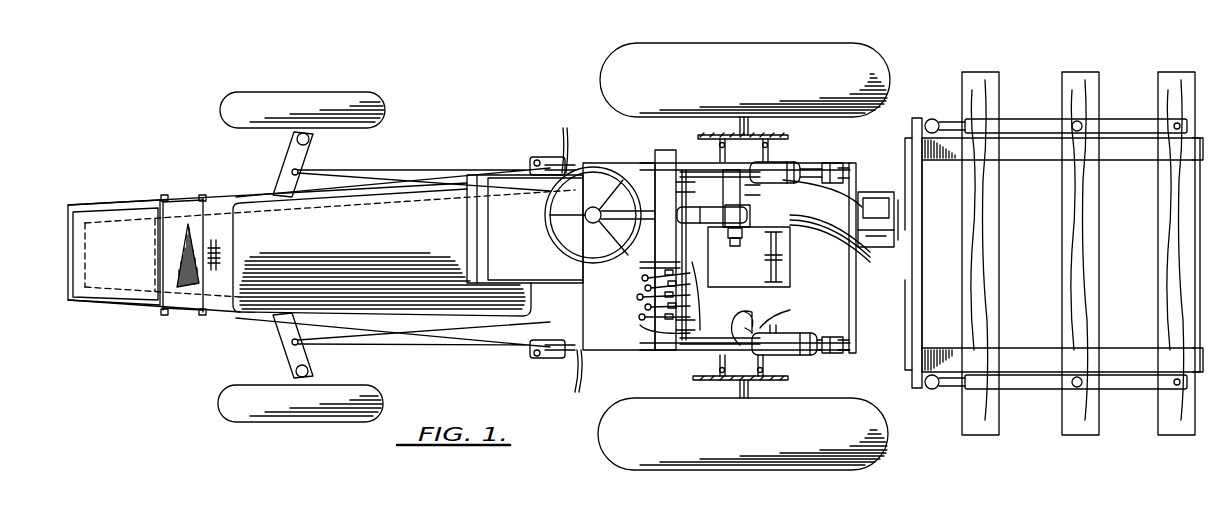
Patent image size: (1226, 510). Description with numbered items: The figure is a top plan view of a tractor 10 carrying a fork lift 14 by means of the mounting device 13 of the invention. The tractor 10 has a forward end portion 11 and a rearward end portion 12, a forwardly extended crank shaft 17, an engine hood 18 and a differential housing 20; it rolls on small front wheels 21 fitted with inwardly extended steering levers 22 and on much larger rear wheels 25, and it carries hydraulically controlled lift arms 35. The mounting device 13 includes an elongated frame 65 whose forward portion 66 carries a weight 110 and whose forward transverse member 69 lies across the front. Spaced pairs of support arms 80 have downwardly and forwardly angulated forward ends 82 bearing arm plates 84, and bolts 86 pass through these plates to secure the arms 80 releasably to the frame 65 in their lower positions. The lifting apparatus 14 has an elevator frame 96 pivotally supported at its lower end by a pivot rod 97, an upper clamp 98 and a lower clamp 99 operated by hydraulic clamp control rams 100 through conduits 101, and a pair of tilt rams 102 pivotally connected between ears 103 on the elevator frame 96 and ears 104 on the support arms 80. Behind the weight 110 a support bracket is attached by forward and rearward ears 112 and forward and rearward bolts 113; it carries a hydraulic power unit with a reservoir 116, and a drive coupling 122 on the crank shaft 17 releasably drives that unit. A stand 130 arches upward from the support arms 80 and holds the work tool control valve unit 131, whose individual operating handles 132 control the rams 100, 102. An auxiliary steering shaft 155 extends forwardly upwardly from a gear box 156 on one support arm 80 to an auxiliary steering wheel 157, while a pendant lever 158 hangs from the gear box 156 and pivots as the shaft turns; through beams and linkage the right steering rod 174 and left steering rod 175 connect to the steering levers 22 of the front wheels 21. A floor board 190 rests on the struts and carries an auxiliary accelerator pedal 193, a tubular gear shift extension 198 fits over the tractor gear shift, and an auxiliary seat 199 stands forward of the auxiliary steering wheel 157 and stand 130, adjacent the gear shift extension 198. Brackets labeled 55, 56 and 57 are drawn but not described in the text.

The tractor 10 is at (254, 330).
The forward end portion 11 is at (232, 312).
The rearward end portion 12 is at (805, 278).
The mounting device 13 is at (841, 354).
The fork lift 14 is at (1103, 64).
The crank shaft 17 is at (222, 256).
The engine hood 18 is at (390, 246).
The differential housing 20 is at (792, 248).
The front wheels 21 is at (348, 100).
The steering levers 22 is at (300, 152).
The rear wheels 25 is at (783, 62).
The lift arms 35 is at (760, 325).
The mounting bar 55 is at (718, 150).
The posts 56 is at (762, 143).
The axle bracket 57 is at (766, 135).
The frame 65 is at (140, 321).
The forward portion 66 is at (102, 305).
The forward transverse member 69 is at (68, 262).
The support arms 80 is at (700, 170).
The forward ends 82 is at (571, 261).
The arm plates 84 is at (550, 160).
The bolts 86 is at (533, 161).
The elevator frame 96 is at (870, 192).
The pivot rod 97 is at (845, 210).
The upper clamp 98 is at (1152, 155).
The lower clamp 99 is at (1115, 390).
The hydraulic clamp control rams 100 is at (915, 297).
The conduits 101 is at (910, 250).
The tilt rams 102 is at (780, 163).
The ears 103 is at (851, 167).
The ears 104 is at (780, 160).
The weight 110 is at (107, 215).
The forward and rearward ears 112 is at (203, 194).
The forward and rearward bolts 113 is at (203, 195).
The reservoir 116 is at (176, 240).
The drive coupling 122 is at (218, 252).
The stand 130 is at (660, 180).
The work tool control valve unit 131 is at (640, 320).
The operating handles 132 is at (637, 300).
The auxiliary steering shaft 155 is at (628, 166).
The gear box 156 is at (752, 218).
The auxiliary steering wheel 157 is at (605, 170).
The pendant lever 158 is at (735, 248).
The right steering rod 174 is at (383, 177).
The left steering rod 175 is at (380, 335).
The floor board 190 is at (603, 340).
The auxiliary accelerator pedal 193 is at (648, 262).
The gear shift extension 198 is at (595, 258).
The auxiliary seat 199 is at (497, 185).